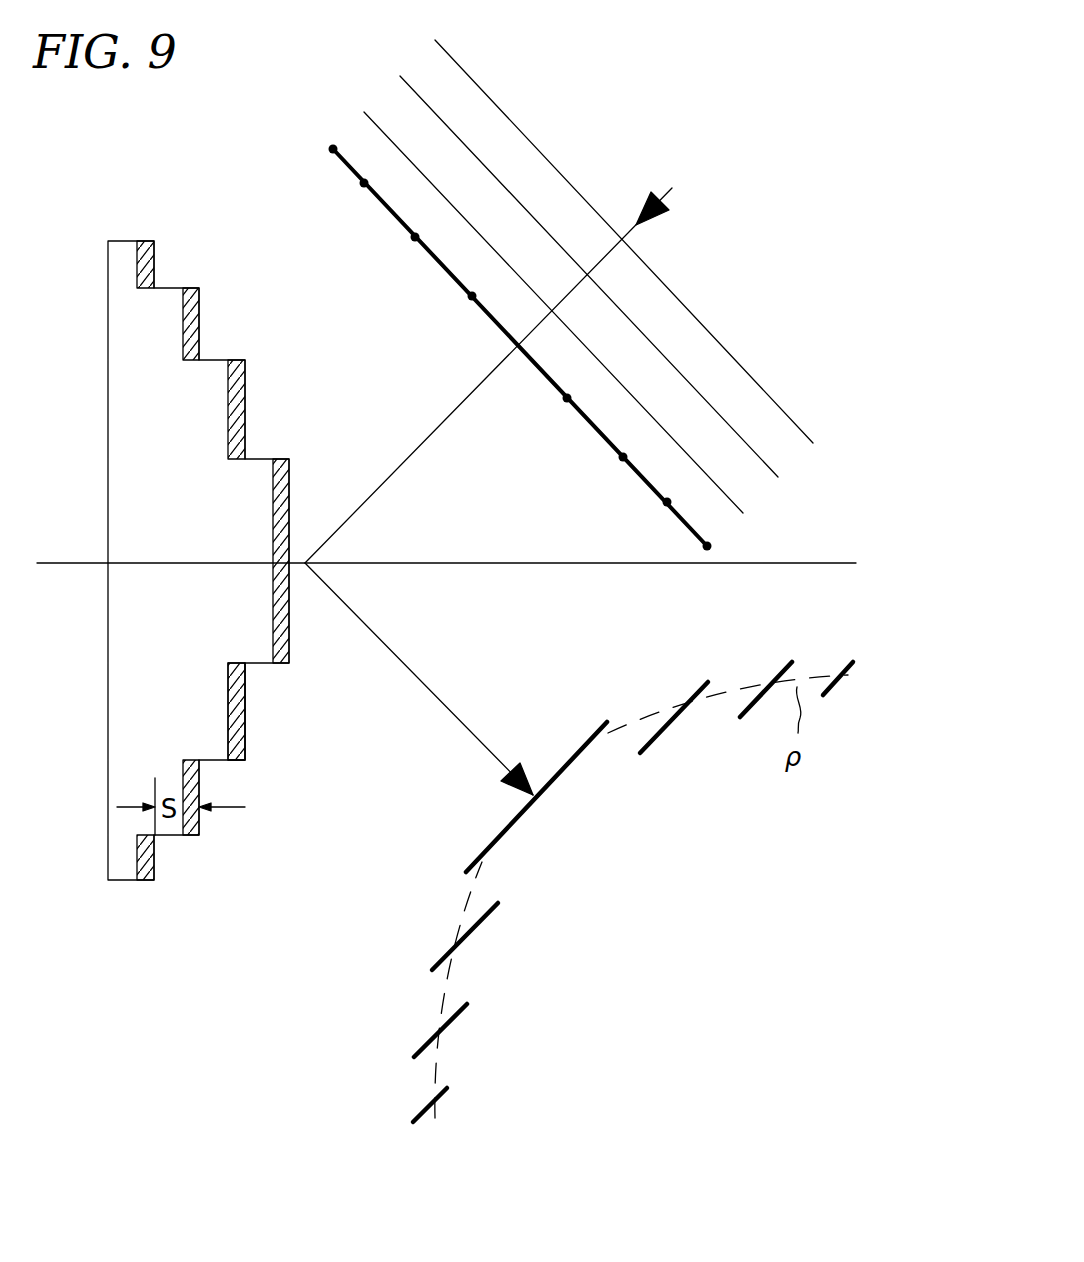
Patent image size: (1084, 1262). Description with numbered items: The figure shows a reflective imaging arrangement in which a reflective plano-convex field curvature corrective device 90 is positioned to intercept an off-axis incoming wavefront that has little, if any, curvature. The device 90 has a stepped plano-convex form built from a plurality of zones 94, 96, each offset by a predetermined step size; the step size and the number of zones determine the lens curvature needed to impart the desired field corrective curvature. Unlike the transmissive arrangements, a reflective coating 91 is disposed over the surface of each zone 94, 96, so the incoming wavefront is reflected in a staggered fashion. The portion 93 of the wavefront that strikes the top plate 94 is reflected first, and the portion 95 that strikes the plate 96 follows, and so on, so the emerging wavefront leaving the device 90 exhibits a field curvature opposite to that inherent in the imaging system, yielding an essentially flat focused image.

The reflective plano-convex field curvature corrective device 90 is at (128, 750).
The reflective coating 91 is at (143, 256).
The portion of wavefront intercepting top plate 93 is at (488, 315).
The zone (top plate) 94 is at (272, 634).
The portion of wavefront intercepting plate 95 is at (442, 272).
The zone (plate) 96 is at (228, 734).